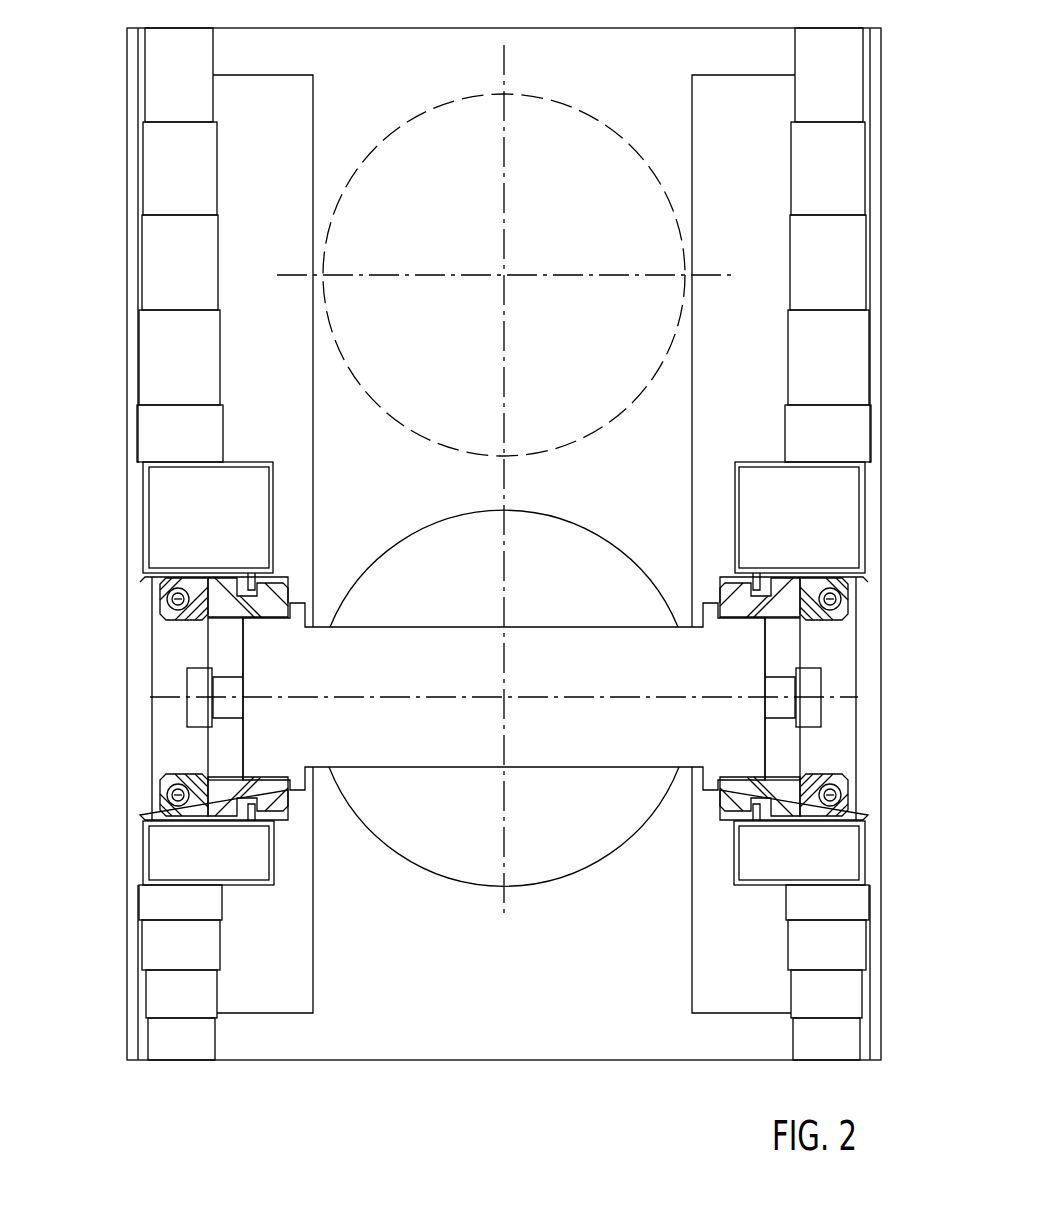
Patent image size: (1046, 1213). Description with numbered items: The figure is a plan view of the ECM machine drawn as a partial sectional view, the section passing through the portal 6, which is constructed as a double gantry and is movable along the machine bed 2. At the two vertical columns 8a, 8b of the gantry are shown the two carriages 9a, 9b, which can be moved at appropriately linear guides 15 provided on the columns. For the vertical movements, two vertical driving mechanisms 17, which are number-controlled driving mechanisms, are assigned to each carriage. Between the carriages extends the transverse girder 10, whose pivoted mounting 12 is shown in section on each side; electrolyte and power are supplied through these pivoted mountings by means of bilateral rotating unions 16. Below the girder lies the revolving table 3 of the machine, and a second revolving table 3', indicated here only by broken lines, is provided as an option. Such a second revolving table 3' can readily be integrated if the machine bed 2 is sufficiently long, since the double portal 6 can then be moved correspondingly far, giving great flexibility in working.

The machine bed 2 is at (458, 1048).
The revolving table 3 is at (504, 480).
The second revolving table 3' is at (504, 263).
The portal 6 is at (122, 480).
The vertical column 8a is at (870, 518).
The vertical column 8b is at (143, 523).
The carriage 9a is at (807, 652).
The carriage 9b is at (200, 630).
The transverse girder 10 is at (540, 643).
The pivoted mounting 12 is at (258, 735).
The linear guide 15 is at (248, 575).
The rotating union 16 is at (185, 692).
The vertical driving mechanism 17 is at (155, 602).